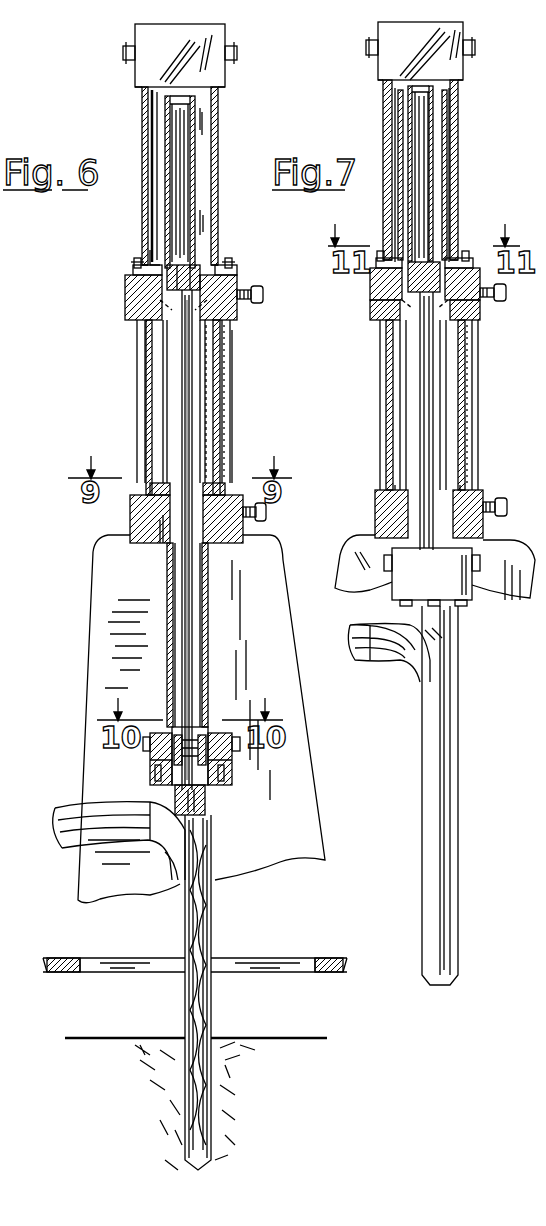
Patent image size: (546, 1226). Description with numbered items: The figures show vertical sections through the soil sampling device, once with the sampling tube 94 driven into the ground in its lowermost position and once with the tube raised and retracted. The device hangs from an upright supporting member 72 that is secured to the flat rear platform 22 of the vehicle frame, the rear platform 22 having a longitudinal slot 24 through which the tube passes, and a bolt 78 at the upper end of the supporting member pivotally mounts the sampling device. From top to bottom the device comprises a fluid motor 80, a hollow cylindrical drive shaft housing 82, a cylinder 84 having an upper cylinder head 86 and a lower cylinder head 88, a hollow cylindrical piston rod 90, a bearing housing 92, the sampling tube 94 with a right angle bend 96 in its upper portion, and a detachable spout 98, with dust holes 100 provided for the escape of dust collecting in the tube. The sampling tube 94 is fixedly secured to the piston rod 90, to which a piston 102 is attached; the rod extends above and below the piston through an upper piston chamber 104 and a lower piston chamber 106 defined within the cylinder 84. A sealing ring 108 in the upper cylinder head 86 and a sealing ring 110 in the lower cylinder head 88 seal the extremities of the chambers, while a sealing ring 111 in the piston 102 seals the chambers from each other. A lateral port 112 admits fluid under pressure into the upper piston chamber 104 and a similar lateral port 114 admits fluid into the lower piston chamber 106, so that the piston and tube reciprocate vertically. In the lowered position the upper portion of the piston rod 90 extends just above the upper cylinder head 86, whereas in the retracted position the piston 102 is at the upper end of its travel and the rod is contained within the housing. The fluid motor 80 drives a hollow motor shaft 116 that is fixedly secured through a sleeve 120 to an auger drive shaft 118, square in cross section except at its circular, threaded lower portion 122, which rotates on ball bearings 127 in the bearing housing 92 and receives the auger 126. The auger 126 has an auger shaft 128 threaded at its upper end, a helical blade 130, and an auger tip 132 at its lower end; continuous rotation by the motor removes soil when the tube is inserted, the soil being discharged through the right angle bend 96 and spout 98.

In FIG. 6, the rear platform 22 is at (335, 960).
In FIG. 6, the longitudinal slot 24 is at (285, 960).
In FIG. 6, the upright supporting member 72 is at (132, 390).
In FIG. 7, the upright supporting member 72 is at (485, 420).
In FIG. 6, the bolt 78 is at (231, 338).
In FIG. 7, the bolt 78 is at (479, 342).
In FIG. 6, the fluid motor 80 is at (222, 70).
In FIG. 7, the fluid motor 80 is at (465, 66).
In FIG. 6, the drive shaft housing 82 is at (218, 190).
In FIG. 7, the drive shaft housing 82 is at (385, 136).
In FIG. 6, the cylinder 84 is at (222, 432).
In FIG. 6, the upper cylinder head 86 is at (125, 300).
In FIG. 6, the lower cylinder head 88 is at (150, 505).
In FIG. 6, the piston rod 90 is at (168, 650).
In FIG. 7, the piston rod 90 is at (450, 178).
In FIG. 6, the bearing housing 92 is at (220, 770).
In FIG. 7, the bearing housing 92 is at (463, 600).
In FIG. 6, the sampling tube 94 is at (213, 1010).
In FIG. 7, the sampling tube 94 is at (446, 740).
In FIG. 6, the right angle bend 96 is at (166, 855).
In FIG. 6, the spout 98 is at (75, 815).
In FIG. 6, the dust holes 100 is at (207, 800).
In FIG. 7, the piston 102 is at (402, 345).
In FIG. 6, the upper piston chamber 104 is at (162, 345).
In FIG. 7, the upper piston chamber 104 is at (372, 298).
In FIG. 6, the lower piston chamber 106 is at (162, 520).
In FIG. 7, the lower piston chamber 106 is at (378, 455).
In FIG. 6, the sealing ring 108 is at (150, 256).
In FIG. 6, the sealing ring 110 is at (165, 545).
In FIG. 7, the sealing ring 111 is at (380, 325).
In FIG. 6, the lateral port 112 is at (233, 312).
In FIG. 7, the lateral port 112 is at (480, 312).
In FIG. 6, the lateral port 114 is at (242, 545).
In FIG. 7, the lateral port 114 is at (476, 495).
In FIG. 6, the hollow motor shaft 116 is at (195, 152).
In FIG. 7, the hollow motor shaft 116 is at (435, 133).
In FIG. 6, the auger drive shaft 118 is at (195, 626).
In FIG. 6, the sleeve 120 is at (185, 262).
In FIG. 6, the lower portion 122 is at (206, 822).
In FIG. 6, the auger 126 is at (190, 922).
In FIG. 6, the ball bearings 127 is at (160, 768).
In FIG. 6, the auger shaft 128 is at (186, 905).
In FIG. 6, the helical blade 130 is at (210, 916).
In FIG. 6, the auger tip 132 is at (205, 1163).